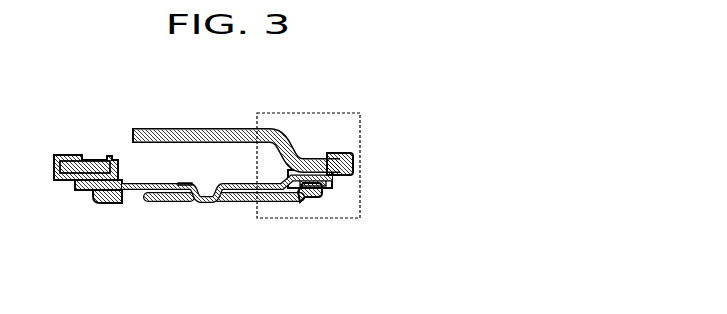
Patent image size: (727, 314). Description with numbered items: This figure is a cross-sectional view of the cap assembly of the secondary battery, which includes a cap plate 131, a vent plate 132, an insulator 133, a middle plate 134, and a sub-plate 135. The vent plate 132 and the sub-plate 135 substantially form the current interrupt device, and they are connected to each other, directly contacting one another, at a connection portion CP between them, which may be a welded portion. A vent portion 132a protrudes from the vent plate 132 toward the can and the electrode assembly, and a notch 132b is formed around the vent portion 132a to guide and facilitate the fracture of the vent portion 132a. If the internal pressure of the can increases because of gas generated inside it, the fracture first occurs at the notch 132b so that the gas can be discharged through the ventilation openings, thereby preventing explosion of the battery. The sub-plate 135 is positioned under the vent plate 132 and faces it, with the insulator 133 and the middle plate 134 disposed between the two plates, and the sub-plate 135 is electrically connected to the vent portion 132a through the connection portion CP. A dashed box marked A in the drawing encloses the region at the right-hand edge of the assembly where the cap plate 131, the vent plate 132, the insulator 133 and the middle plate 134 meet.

The cap plate 131 is at (228, 128).
The vent plate 132 is at (354, 164).
The vent portion 132a is at (187, 203).
The notch 132b is at (162, 203).
The insulator 133 is at (336, 182).
The middle plate 134 is at (320, 190).
The sub-plate 135 is at (252, 203).
The connection portion CP is at (207, 205).
The enlarged region A is at (330, 113).